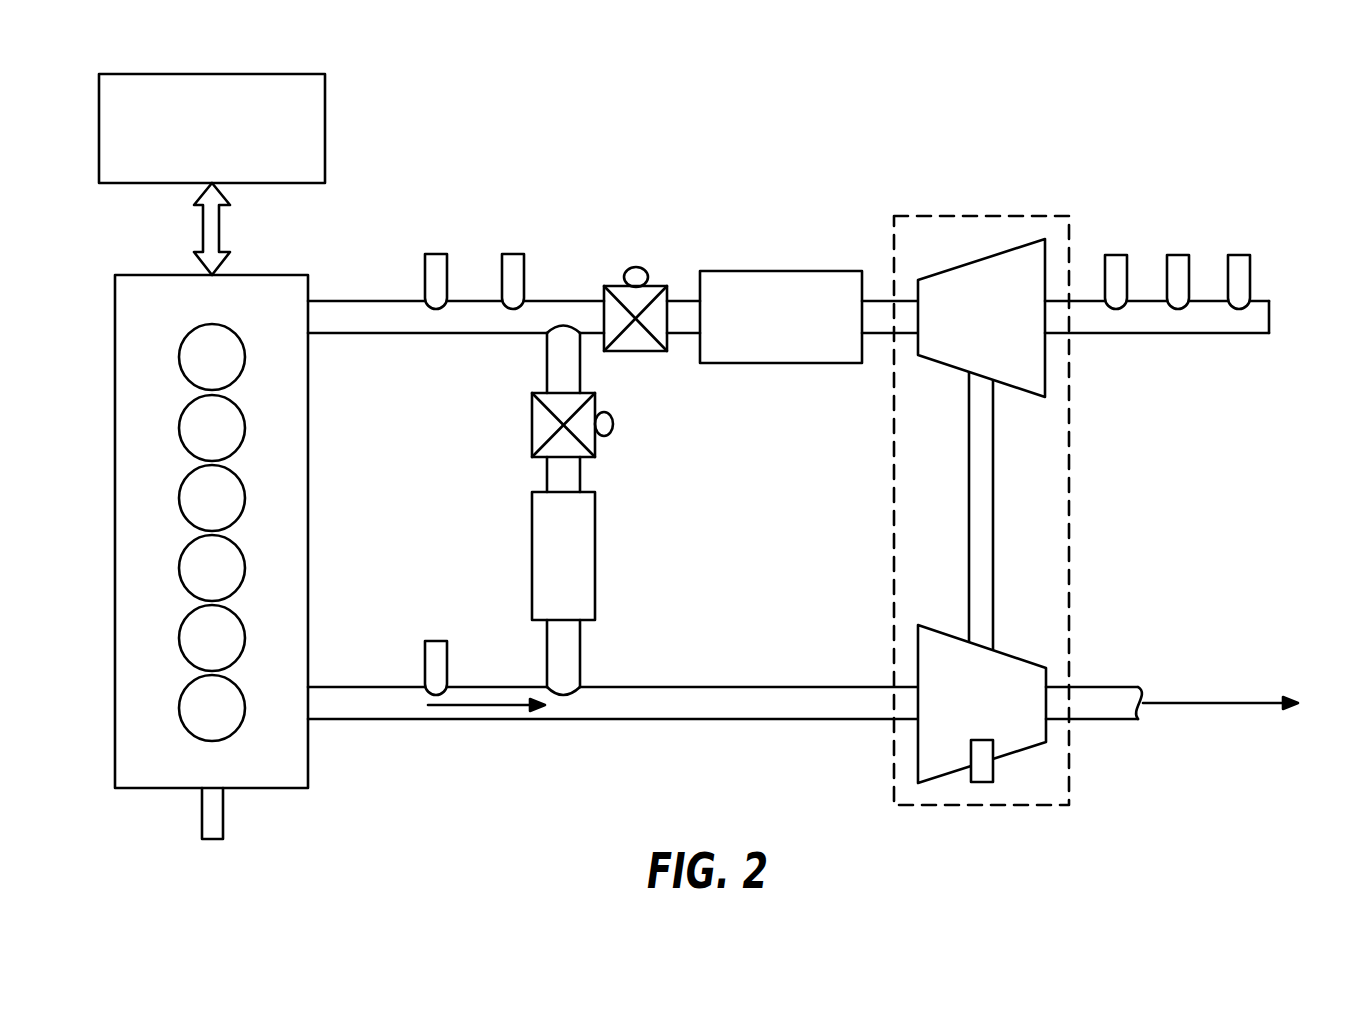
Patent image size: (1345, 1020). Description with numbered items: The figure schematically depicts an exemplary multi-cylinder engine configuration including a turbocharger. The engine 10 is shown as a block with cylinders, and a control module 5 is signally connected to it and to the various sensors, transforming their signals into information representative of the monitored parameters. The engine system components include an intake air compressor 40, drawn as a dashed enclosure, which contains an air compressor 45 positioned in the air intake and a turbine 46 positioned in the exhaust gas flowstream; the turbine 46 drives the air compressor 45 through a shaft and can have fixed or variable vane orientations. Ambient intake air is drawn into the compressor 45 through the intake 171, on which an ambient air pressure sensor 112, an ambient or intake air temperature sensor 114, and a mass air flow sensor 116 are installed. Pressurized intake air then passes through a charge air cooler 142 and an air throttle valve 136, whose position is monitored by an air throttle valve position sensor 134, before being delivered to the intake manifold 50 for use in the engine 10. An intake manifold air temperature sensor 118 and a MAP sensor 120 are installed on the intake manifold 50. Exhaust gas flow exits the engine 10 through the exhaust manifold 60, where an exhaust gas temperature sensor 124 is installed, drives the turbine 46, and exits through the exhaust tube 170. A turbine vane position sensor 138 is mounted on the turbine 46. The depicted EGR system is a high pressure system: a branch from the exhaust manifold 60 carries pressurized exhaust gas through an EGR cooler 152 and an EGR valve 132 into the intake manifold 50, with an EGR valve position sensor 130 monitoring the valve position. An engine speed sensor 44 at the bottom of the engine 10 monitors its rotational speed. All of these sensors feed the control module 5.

The control module 5 is at (313, 132).
The engine 10 is at (300, 288).
The engine speed sensor 44 is at (215, 823).
The intake manifold 50 is at (358, 323).
The exhaust manifold 60 is at (700, 710).
The intake air compressor 40 is at (970, 216).
The air compressor 45 is at (1015, 275).
The turbine 46 is at (1005, 728).
The ambient air pressure sensor 112 is at (1240, 265).
The ambient or intake air temperature sensor 114 is at (1178, 265).
The mass air flow sensor 116 is at (1116, 265).
The intake manifold air temperature sensor 118 is at (515, 270).
The MAP sensor 120 is at (437, 270).
The exhaust gas temperature sensor 124 is at (436, 648).
The EGR valve position sensor 130 is at (613, 427).
The EGR valve 132 is at (540, 438).
The air throttle valve position sensor 134 is at (636, 267).
The air throttle valve 136 is at (645, 297).
The turbine vane position sensor 138 is at (983, 783).
The charge air cooler 142 is at (778, 287).
The EGR cooler 152 is at (582, 550).
The exhaust tube 170 is at (1117, 678).
The intake 171 is at (1166, 345).